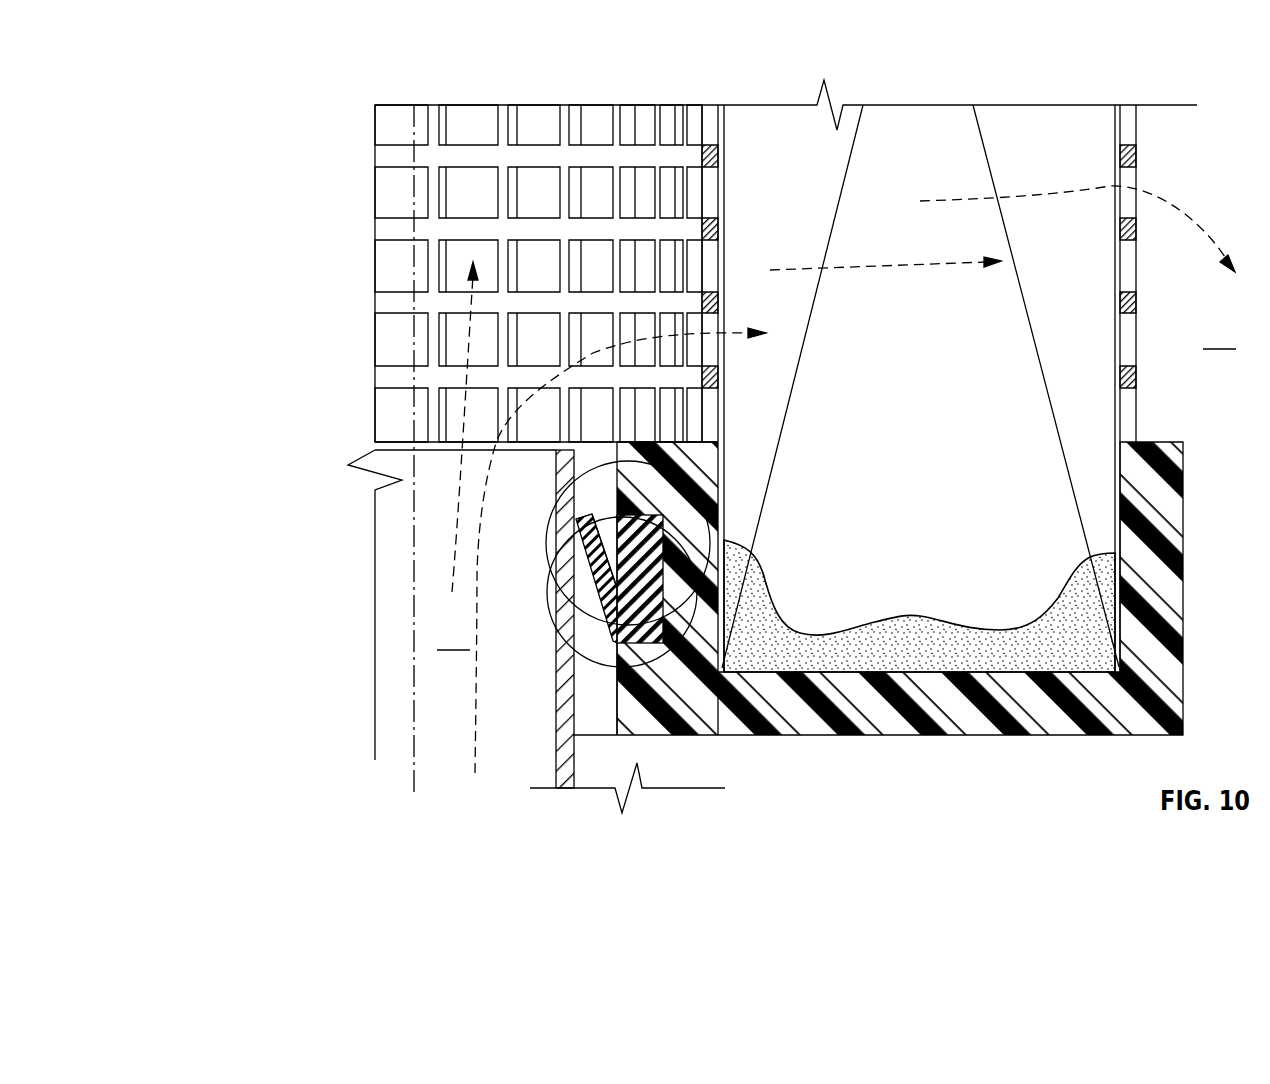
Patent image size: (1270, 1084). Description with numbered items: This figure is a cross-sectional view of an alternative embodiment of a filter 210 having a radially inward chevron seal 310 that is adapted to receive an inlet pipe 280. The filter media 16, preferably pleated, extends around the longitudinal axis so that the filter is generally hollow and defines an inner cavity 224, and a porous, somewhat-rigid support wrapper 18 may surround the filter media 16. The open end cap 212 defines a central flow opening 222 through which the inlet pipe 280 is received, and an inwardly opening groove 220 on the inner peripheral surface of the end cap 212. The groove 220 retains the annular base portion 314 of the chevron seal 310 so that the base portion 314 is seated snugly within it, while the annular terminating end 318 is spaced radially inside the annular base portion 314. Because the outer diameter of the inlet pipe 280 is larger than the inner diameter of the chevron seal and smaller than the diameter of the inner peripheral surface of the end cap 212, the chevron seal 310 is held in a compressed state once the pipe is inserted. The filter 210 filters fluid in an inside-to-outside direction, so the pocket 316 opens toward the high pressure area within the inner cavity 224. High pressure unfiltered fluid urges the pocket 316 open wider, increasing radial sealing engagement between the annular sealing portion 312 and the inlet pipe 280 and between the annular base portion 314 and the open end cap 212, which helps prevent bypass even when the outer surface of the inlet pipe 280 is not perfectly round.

The filter 210 is at (225, 95).
The support wrapper 18 is at (575, 135).
The filter media 16 is at (770, 132).
The inner cavity 224 is at (590, 280).
The inwardly opening groove 220 is at (658, 490).
The open end cap 212 is at (908, 735).
The inlet pipe 280 is at (553, 693).
The end cap central flow opening 222 is at (617, 715).
The annular base portion 314 is at (657, 545).
The annular sealing portion 312 is at (600, 568).
The annular terminating end 318 is at (575, 518).
The pocket 316 is at (604, 517).
The chevron seal 310 is at (640, 637).